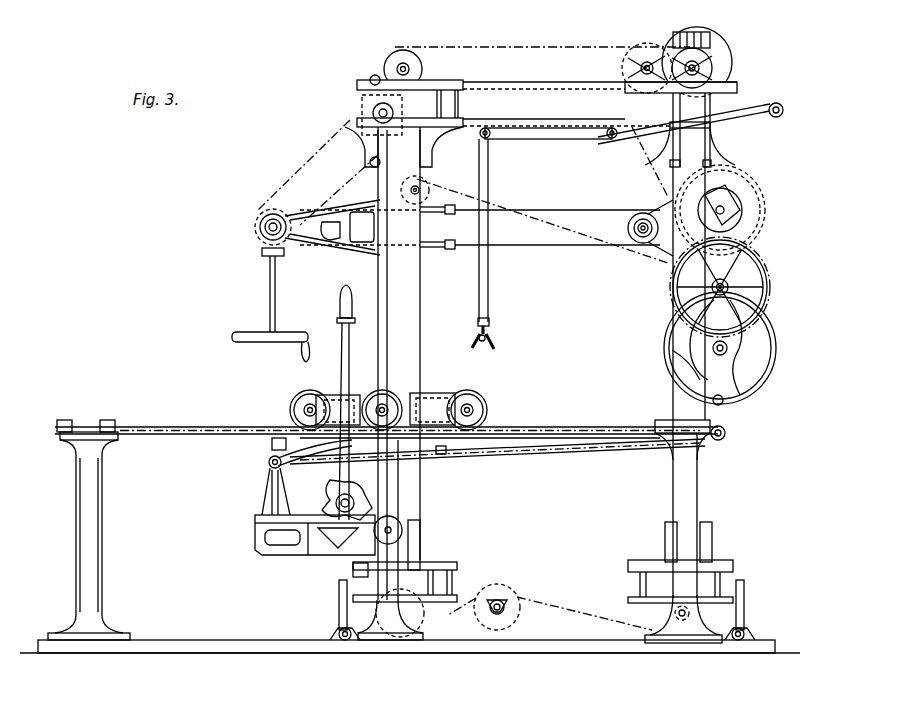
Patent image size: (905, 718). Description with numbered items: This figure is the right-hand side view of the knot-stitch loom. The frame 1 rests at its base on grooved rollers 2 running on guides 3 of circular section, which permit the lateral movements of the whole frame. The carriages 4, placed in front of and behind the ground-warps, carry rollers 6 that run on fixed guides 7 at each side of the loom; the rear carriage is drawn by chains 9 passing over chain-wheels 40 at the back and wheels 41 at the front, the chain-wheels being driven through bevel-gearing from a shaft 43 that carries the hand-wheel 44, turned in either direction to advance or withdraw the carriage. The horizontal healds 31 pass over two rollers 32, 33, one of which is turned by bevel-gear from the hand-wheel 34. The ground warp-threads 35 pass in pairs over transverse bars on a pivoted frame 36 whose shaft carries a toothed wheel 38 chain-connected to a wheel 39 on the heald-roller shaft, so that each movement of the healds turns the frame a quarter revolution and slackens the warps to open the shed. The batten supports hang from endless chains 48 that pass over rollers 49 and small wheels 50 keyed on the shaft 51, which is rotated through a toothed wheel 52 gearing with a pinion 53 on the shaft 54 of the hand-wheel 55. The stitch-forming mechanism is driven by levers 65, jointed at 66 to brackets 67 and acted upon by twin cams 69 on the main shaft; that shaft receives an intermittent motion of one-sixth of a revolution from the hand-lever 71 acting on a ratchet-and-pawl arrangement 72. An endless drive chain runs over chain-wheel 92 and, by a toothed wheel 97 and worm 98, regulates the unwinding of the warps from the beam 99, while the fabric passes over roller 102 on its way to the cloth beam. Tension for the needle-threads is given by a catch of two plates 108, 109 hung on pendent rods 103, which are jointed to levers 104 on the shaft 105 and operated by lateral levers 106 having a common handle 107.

The frame 1 is at (541, 361).
The grooved rollers 2 is at (340, 592).
The guides 3 is at (340, 631).
The carriages 4 is at (385, 409).
The rollers 6 is at (391, 401).
The fixed guides 7 is at (386, 419).
The chains 9 is at (448, 458).
The healds 31 is at (480, 219).
The heald-roller 32 is at (266, 230).
The roller 33 is at (650, 191).
The hand-wheel 34 is at (271, 305).
The ground warp-threads 35 is at (542, 36).
The frame 36 is at (382, 114).
The toothed wheel 38 is at (362, 96).
The wheel 39 is at (270, 210).
The chain-wheels 40 is at (725, 437).
The wheels 41 is at (440, 452).
The shaft 43 is at (478, 449).
The hand-wheel 44 is at (272, 445).
The endless chains 48 is at (542, 221).
The rollers 49 is at (420, 188).
The small wheels 50 is at (705, 281).
The shaft 51 is at (737, 277).
The toothed wheel 52 is at (766, 287).
The pinion 53 is at (728, 348).
The shaft 54 is at (712, 349).
The hand-wheel 55 is at (726, 348).
The levers 65 is at (318, 452).
The joint 66 is at (268, 464).
The brackets 67 is at (272, 500).
The twin cams 69 is at (345, 495).
The hand-lever 71 is at (345, 348).
The ratchet-and-pawl arrangement 72 is at (331, 503).
The chain-wheel 92 is at (416, 58).
The toothed wheel 97 is at (718, 45).
The worm 98 is at (695, 32).
The beam 99 is at (720, 210).
The roller 102 is at (512, 605).
The pendent rods 103 is at (485, 286).
The levers 104 is at (538, 137).
The shaft 105 is at (612, 140).
The lateral levers 106 is at (742, 114).
The handle 107 is at (773, 118).
The plate 108 is at (488, 350).
The plate 109 is at (466, 343).